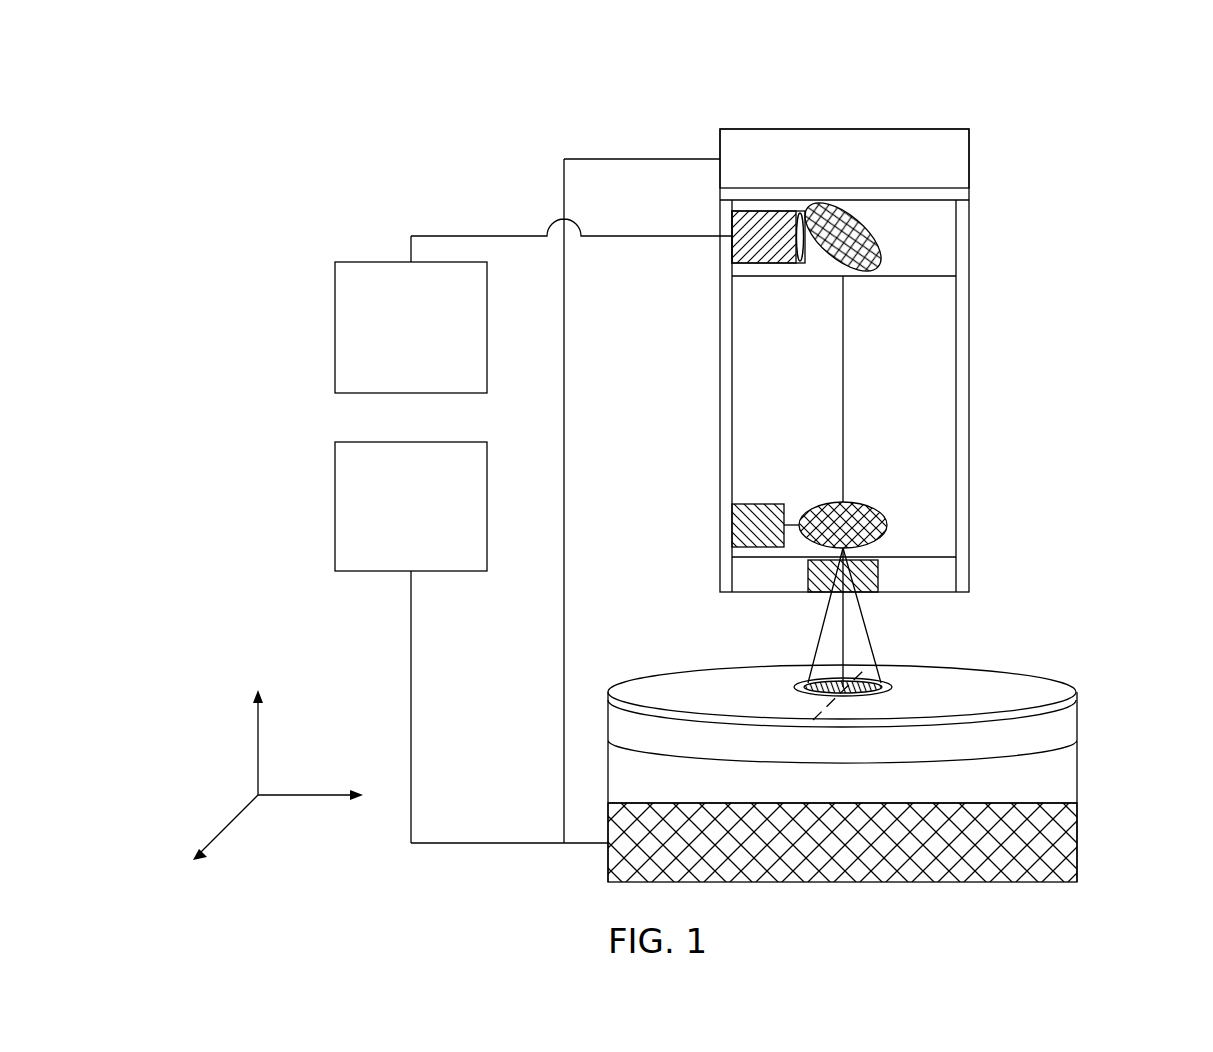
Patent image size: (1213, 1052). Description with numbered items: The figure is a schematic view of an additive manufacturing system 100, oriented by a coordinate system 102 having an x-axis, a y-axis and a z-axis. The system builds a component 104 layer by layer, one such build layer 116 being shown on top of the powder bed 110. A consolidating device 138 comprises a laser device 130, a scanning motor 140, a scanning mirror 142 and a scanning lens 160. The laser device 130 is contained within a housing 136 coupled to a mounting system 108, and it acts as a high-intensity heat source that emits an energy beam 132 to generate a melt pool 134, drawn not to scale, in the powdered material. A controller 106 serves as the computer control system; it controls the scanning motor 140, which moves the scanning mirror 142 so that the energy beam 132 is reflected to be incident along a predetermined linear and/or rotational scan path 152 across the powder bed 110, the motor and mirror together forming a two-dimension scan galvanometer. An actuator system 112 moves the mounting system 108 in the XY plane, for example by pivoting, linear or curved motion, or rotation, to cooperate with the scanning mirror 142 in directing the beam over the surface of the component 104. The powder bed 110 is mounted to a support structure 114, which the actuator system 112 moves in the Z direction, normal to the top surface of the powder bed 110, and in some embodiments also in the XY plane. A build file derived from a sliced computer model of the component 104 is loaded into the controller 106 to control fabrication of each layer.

The additive manufacturing system 100 is at (876, 74).
The coordinate system 102 is at (210, 742).
The component 104 is at (1062, 727).
The controller 106 is at (411, 327).
The mounting system 108 is at (950, 158).
The powder bed 110 is at (1062, 777).
The actuator system 112 is at (411, 506).
The support structure 114 is at (1062, 847).
The build layer 116 is at (1030, 690).
The laser device 130 is at (733, 227).
The energy beam 132 is at (843, 316).
The melt pool 134 is at (890, 680).
The housing 136 is at (969, 390).
The consolidating device 138 is at (1106, 285).
The scanning motor 140 is at (747, 503).
The scanning mirror 142 is at (875, 520).
The scan path 152 is at (815, 714).
The scanning lens 160 is at (867, 577).